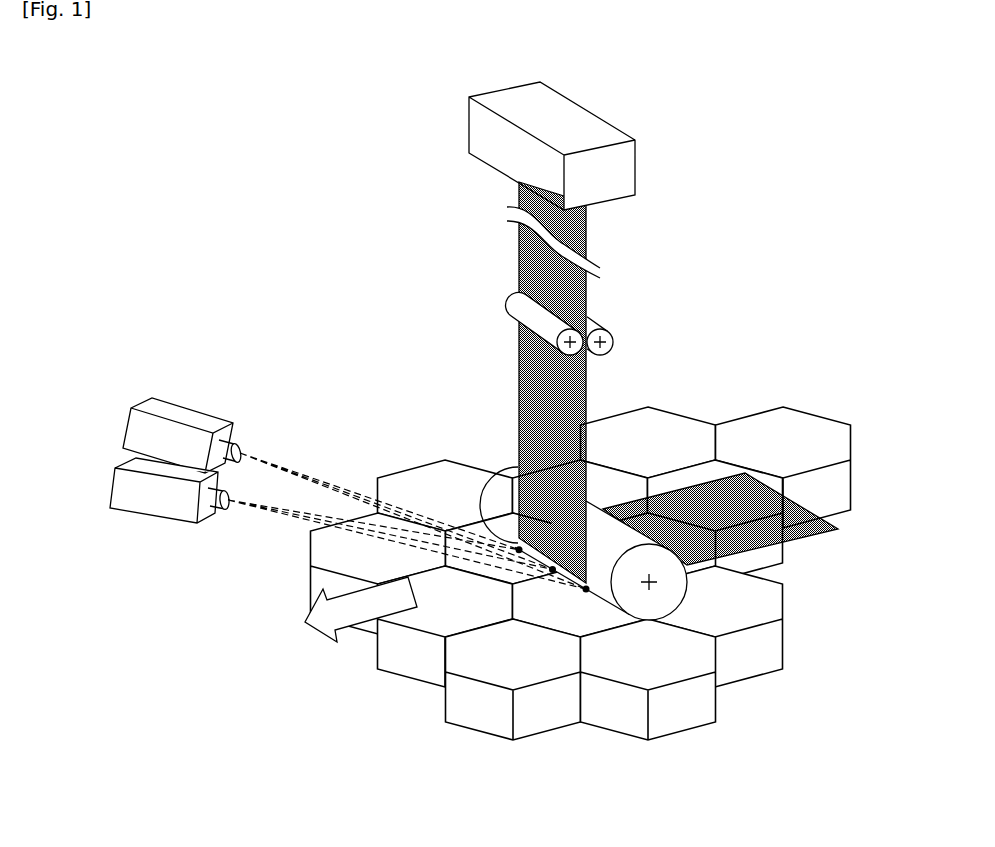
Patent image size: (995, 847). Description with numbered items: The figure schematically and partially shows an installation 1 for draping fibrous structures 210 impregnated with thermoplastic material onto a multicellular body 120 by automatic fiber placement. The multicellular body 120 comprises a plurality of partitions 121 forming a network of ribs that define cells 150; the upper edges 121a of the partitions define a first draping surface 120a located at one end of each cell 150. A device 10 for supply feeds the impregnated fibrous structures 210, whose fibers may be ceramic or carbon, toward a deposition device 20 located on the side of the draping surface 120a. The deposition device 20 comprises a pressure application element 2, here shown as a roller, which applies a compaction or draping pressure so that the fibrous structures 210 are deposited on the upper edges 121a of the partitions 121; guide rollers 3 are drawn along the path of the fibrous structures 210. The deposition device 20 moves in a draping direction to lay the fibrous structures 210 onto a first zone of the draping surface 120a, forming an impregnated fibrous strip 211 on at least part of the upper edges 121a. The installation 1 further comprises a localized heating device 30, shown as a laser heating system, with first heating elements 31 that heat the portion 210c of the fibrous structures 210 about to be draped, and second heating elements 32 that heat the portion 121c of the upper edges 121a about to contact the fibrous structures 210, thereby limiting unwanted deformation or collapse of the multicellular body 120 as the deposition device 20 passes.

The installation 1 is at (348, 338).
The pressure application element 2 is at (613, 537).
The guide rollers 3 is at (520, 312).
The device for supply 10 is at (572, 127).
The deposition device 20 is at (690, 350).
The localized heating device 30 is at (139, 380).
The first heating element 31 is at (176, 433).
The second heating element 32 is at (132, 500).
The multicellular body 120 is at (795, 442).
The first draping surface 120a is at (418, 487).
The partition 121 is at (680, 707).
The upper edge 121a is at (613, 683).
The portion of the upper edge 121c is at (545, 576).
The cell 150 is at (665, 657).
The fibrous structure 210 is at (587, 292).
The portion of the fibrous structure 210c is at (512, 530).
The impregnated fibrous strip 211 is at (785, 532).